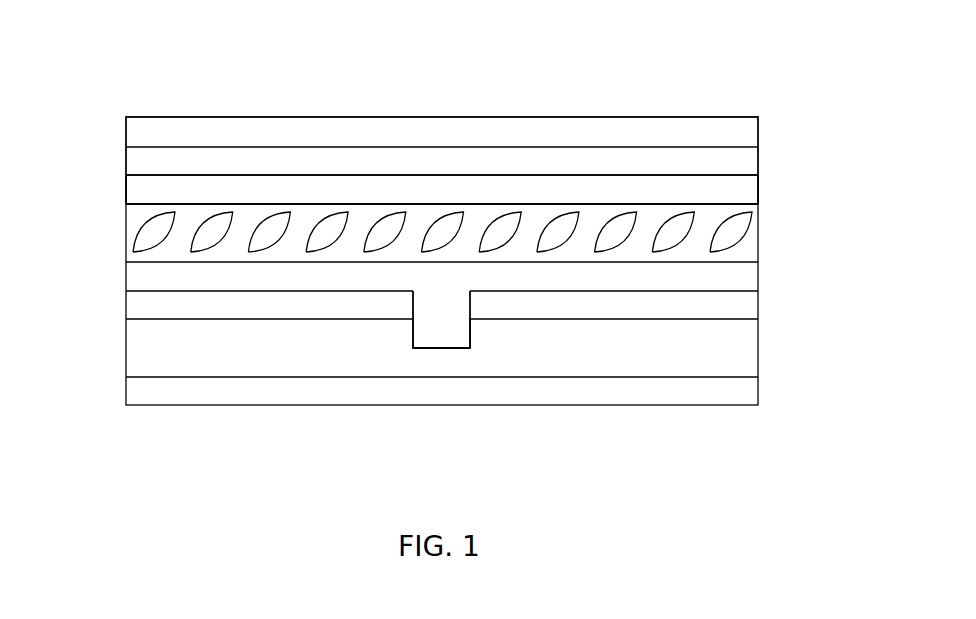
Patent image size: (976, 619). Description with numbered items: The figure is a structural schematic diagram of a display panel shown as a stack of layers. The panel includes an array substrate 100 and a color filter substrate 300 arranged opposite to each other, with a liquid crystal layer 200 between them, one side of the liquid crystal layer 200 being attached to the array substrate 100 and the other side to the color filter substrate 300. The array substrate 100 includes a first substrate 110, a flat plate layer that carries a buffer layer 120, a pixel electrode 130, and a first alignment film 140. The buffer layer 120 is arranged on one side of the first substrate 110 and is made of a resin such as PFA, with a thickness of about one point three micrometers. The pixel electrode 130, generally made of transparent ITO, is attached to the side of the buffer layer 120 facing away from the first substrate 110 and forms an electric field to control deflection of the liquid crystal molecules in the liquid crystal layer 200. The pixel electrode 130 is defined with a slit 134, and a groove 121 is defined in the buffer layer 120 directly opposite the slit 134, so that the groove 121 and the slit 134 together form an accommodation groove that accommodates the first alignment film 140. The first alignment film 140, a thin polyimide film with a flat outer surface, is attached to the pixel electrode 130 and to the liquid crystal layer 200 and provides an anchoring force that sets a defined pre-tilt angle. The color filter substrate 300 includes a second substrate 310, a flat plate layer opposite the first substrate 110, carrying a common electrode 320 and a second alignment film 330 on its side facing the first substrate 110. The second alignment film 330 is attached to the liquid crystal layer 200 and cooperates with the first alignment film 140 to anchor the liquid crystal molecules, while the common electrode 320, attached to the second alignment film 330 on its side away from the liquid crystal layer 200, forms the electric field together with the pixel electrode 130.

The array substrate 100 is at (650, 422).
The first substrate 110 is at (182, 405).
The buffer layer 120 is at (325, 345).
The groove 121 is at (450, 332).
The pixel electrode 130 is at (707, 304).
The slit 134 is at (442, 292).
The first alignment film 140 is at (728, 273).
The liquid crystal layer 200 is at (135, 238).
The color filter substrate 300 is at (562, 100).
The second substrate 310 is at (212, 117).
The common electrode 320 is at (183, 160).
The second alignment film 330 is at (700, 188).